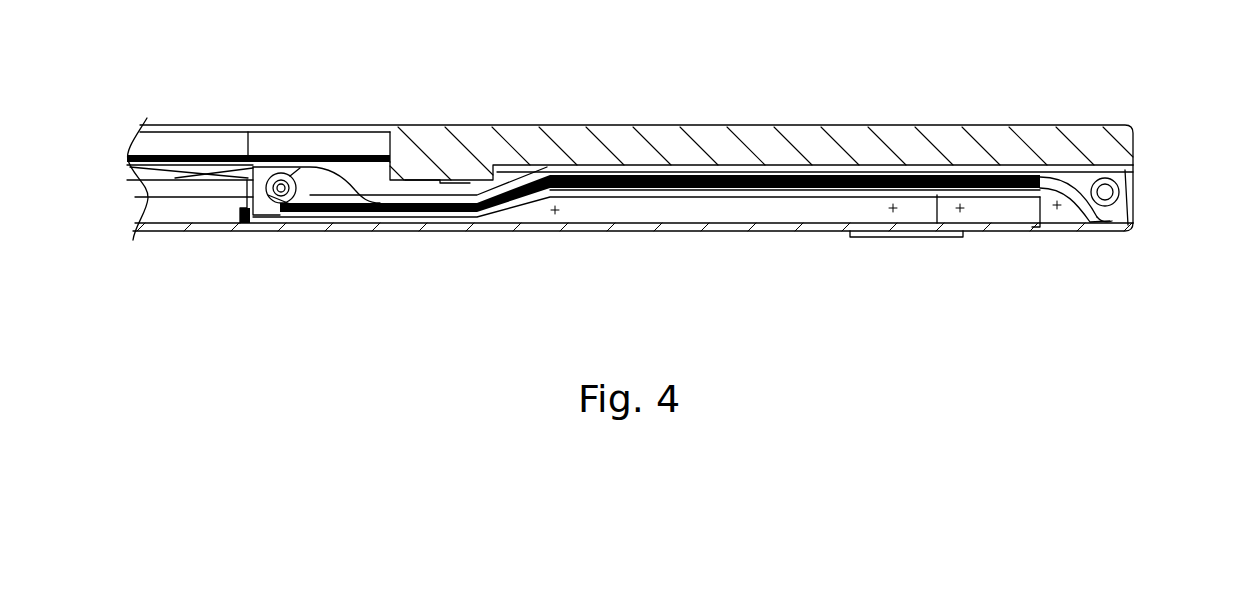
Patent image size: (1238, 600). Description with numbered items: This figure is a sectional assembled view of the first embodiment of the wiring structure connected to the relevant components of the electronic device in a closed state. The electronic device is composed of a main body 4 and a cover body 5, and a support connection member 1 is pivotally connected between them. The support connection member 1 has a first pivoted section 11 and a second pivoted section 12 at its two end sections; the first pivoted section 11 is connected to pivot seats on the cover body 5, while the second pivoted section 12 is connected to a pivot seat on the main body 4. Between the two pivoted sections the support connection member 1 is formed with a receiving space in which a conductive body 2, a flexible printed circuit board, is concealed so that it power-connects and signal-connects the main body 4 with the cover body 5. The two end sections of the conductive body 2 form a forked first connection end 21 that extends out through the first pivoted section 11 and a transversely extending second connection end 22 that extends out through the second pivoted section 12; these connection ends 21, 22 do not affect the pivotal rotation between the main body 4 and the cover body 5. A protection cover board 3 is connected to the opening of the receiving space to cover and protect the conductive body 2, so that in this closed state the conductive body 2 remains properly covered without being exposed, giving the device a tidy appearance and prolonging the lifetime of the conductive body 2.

The support connection member 1 is at (828, 163).
The conductive body 2 is at (622, 197).
The protection cover board 3 is at (720, 190).
The main body 4 is at (1000, 237).
The cover body 5 is at (432, 150).
The first pivoted section 11 is at (277, 160).
The second pivoted section 12 is at (1137, 168).
The first connection end 21 is at (250, 232).
The second connection end 22 is at (1123, 233).